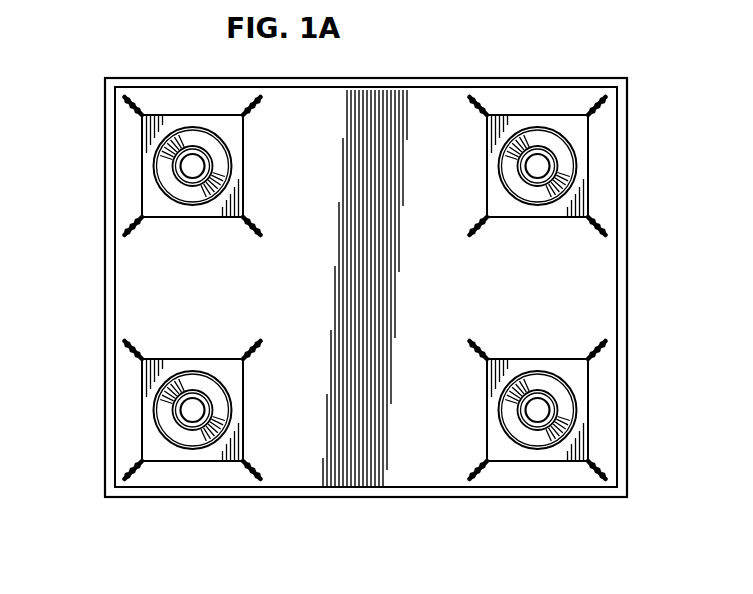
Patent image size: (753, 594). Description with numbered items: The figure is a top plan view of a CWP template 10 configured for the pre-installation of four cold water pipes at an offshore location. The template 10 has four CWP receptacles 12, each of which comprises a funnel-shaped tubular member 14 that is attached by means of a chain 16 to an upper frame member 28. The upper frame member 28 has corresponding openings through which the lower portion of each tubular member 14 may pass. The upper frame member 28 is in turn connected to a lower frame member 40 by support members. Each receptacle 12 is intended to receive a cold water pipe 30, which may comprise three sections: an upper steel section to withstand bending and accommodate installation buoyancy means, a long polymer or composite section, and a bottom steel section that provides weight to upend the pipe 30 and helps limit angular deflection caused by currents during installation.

The CWP template 10 is at (516, 504).
The lower frame member 40 is at (465, 80).
The upper frame member 28 is at (452, 298).
The CWP receptacle 12 is at (243, 158).
The chain 16 is at (125, 100).
The funnel-shaped tubular member 14 is at (154, 167).
The cold water pipe 30 is at (197, 177).